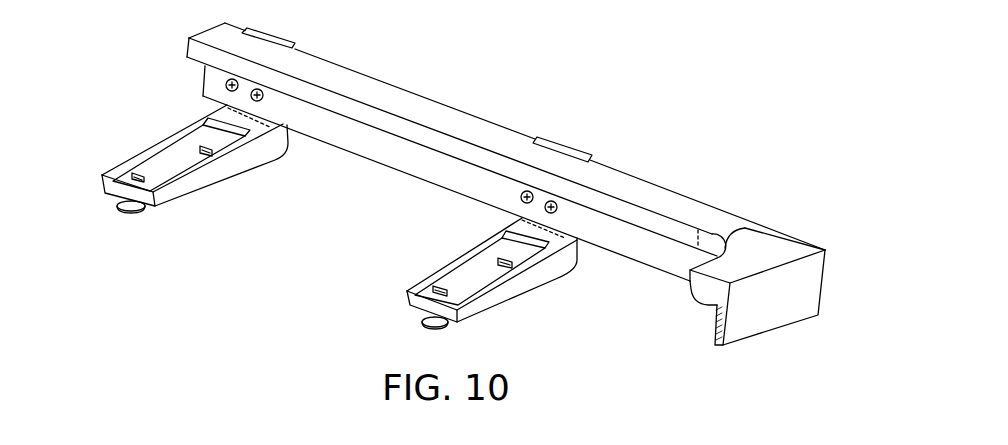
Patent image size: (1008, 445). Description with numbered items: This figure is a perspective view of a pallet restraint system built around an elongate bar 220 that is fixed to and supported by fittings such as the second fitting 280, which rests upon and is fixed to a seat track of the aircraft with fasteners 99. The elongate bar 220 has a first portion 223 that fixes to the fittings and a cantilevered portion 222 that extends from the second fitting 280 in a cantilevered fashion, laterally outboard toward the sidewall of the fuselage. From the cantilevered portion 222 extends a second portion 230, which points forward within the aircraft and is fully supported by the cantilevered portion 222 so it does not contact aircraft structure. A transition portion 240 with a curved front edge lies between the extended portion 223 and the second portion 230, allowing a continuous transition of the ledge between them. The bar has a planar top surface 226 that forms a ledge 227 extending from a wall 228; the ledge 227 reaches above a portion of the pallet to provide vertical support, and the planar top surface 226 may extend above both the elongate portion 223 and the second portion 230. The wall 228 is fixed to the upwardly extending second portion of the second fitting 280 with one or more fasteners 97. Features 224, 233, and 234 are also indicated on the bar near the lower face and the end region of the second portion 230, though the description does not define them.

The fasteners 97 is at (267, 93).
The fasteners 99 is at (115, 204).
The elongate bar 220 is at (625, 180).
The cantilevered portion 222 is at (682, 208).
The first portion 223 is at (362, 118).
The lower front face 224 is at (398, 155).
The planar top surface 226 is at (435, 112).
The ledge 227 is at (325, 103).
The wall 228 is at (618, 235).
The second portion 230 is at (705, 287).
The notch 233 is at (687, 278).
The lip 234 is at (710, 333).
The transition portion 240 is at (756, 227).
The second fitting 280 is at (483, 300).